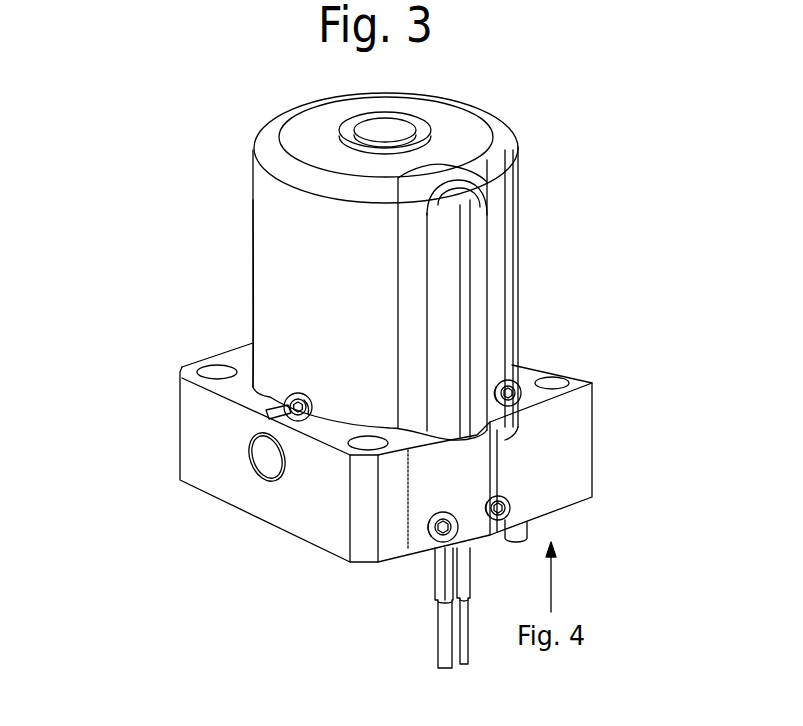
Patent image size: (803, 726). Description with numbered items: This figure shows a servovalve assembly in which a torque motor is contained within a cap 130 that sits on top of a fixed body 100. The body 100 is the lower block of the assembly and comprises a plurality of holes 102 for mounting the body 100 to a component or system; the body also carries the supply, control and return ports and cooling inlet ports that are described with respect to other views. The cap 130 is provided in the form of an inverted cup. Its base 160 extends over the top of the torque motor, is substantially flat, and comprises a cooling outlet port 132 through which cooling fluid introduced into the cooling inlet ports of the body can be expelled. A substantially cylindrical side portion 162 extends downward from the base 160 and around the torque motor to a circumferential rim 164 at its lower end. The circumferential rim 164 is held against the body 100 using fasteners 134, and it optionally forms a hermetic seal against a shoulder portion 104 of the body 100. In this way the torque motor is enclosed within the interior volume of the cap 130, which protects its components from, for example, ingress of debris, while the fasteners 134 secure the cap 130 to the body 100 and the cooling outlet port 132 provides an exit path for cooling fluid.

The body 100 is at (374, 452).
The holes 102 is at (220, 372).
The shoulder portion 104 is at (240, 353).
The cap 130 is at (389, 241).
The cooling outlet port 132 is at (423, 128).
The fasteners 134 is at (512, 366).
The base 160 is at (317, 122).
The side portion 162 is at (277, 223).
The circumferential rim 164 is at (262, 396).